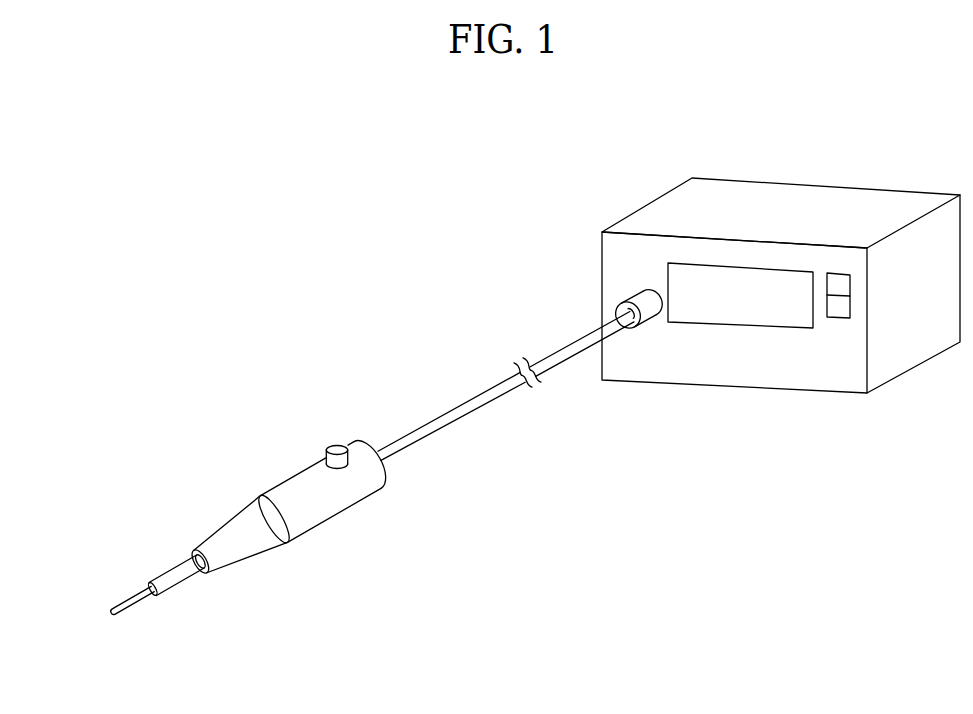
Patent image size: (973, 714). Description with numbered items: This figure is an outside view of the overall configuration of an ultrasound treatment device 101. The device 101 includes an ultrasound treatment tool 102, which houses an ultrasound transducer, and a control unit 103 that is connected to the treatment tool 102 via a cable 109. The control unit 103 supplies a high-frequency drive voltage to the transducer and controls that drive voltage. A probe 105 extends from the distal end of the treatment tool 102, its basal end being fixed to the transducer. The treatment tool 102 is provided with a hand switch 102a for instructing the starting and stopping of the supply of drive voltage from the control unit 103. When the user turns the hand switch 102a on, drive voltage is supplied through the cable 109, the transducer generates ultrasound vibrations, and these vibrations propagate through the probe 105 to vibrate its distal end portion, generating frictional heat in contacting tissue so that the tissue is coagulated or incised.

The ultrasound treatment device 101 is at (385, 179).
The ultrasound treatment tool 102 is at (322, 523).
The hand switch 102a is at (333, 443).
The control unit 103 is at (803, 192).
The probe 105 is at (135, 612).
The cable 109 is at (482, 388).